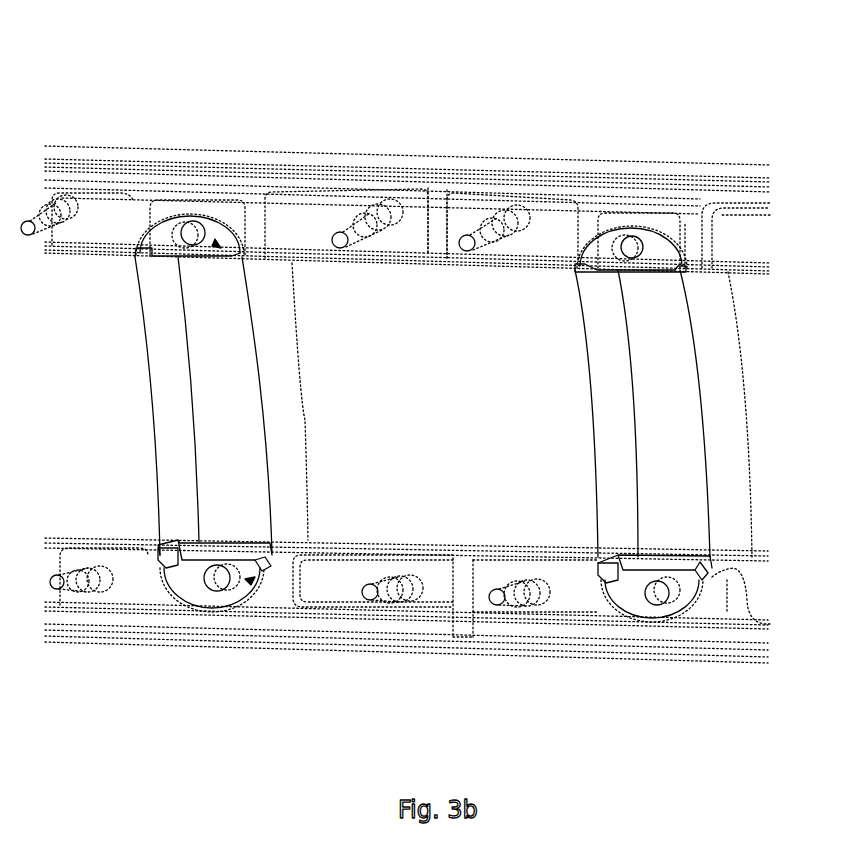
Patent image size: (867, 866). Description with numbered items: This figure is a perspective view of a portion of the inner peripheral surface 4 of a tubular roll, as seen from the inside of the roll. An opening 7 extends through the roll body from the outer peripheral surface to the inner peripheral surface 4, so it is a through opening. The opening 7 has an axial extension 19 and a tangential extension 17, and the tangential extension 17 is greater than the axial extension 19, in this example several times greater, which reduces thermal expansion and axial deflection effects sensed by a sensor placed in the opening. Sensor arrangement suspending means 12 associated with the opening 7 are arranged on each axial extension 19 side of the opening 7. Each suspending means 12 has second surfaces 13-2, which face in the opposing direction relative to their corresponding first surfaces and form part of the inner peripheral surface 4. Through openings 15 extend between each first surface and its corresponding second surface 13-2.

The inner peripheral surface 4 is at (433, 353).
The opening 7 is at (187, 371).
The sensor arrangement suspending means 12 is at (217, 243).
The second surface 13-2 is at (187, 371).
The through opening 15 is at (182, 241).
The tangential extension 17 is at (215, 450).
The axial extension 19 is at (182, 257).